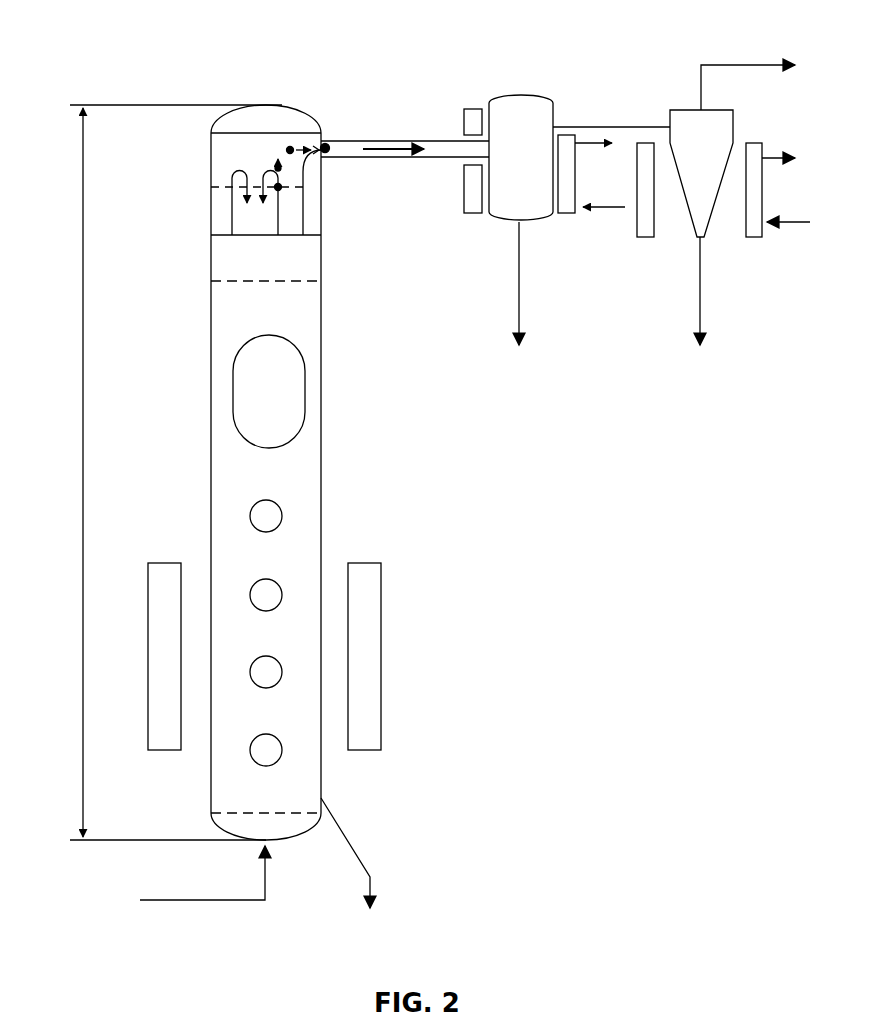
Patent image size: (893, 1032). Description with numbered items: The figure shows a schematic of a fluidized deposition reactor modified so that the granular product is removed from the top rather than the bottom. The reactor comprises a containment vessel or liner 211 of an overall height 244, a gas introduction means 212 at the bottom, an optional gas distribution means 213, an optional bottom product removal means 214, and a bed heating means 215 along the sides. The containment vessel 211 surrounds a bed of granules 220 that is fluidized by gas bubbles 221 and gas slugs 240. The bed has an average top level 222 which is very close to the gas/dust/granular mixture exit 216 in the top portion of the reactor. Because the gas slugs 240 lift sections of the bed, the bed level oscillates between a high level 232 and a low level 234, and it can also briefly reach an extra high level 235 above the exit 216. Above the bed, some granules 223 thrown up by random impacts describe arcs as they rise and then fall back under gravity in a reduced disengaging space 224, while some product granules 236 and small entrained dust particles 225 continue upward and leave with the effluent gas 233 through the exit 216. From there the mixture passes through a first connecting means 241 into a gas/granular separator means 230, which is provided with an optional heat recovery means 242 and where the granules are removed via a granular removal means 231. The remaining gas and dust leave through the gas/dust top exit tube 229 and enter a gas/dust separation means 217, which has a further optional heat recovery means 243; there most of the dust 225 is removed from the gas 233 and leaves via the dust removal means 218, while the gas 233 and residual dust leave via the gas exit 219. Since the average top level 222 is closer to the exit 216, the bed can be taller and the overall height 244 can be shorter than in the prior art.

The containment vessel 211 is at (209, 406).
The gas introduction means 212 is at (212, 898).
The gas distribution means 213 is at (209, 812).
The bottom product removal means 214 is at (356, 845).
The bed heating means 215 is at (389, 636).
The gas/dust/granular mixture exit 216 is at (326, 138).
The gas/dust separation means 217 is at (704, 176).
The dust removal means 218 is at (704, 292).
The gas exit 219 is at (767, 63).
The bed of granules 220 is at (268, 474).
The gas bubbles 221 is at (284, 517).
The average top level 222 is at (209, 235).
The granules 223 is at (284, 190).
The disengaging space 224 is at (222, 204).
The entrained dust particles 225 is at (289, 145).
The gas/dust top exit tube 229 is at (584, 126).
The gas/granular separator means 230 is at (521, 155).
The granular removal means 231 is at (523, 278).
The high level 232 is at (209, 187).
The effluent gas 233 is at (388, 145).
The low level 234 is at (209, 281).
The extra high level 235 is at (209, 133).
The product granules 236 is at (331, 152).
The gas slugs 240 is at (286, 370).
The first connecting means 241 is at (442, 140).
The heat recovery means 242 is at (577, 216).
The further heat recovery means 243 is at (764, 241).
The height 244 is at (81, 204).